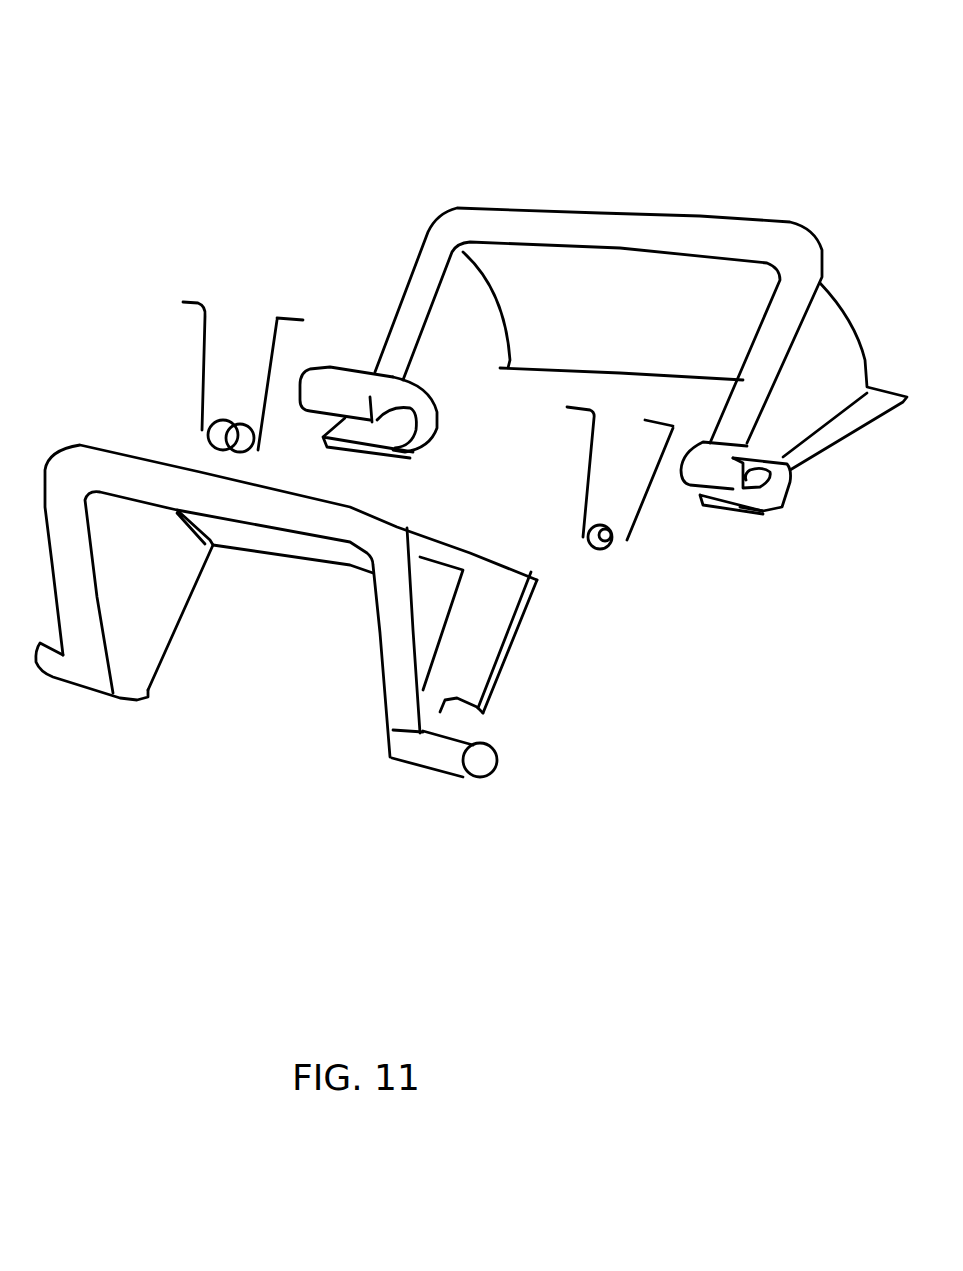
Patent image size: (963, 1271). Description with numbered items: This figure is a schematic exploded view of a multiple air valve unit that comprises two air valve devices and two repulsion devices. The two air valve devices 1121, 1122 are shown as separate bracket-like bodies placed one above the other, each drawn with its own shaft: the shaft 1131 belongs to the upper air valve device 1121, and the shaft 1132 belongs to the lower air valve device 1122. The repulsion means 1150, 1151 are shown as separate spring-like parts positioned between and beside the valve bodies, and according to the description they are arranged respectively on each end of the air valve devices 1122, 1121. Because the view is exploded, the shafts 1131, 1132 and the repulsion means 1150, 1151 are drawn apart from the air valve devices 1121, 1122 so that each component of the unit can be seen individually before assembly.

The air valve device 1121 is at (835, 297).
The air valve device 1122 is at (437, 588).
The shaft 1131 is at (778, 512).
The shaft 1132 is at (495, 768).
The repulsion means 1150 is at (640, 537).
The repulsion means 1151 is at (199, 290).